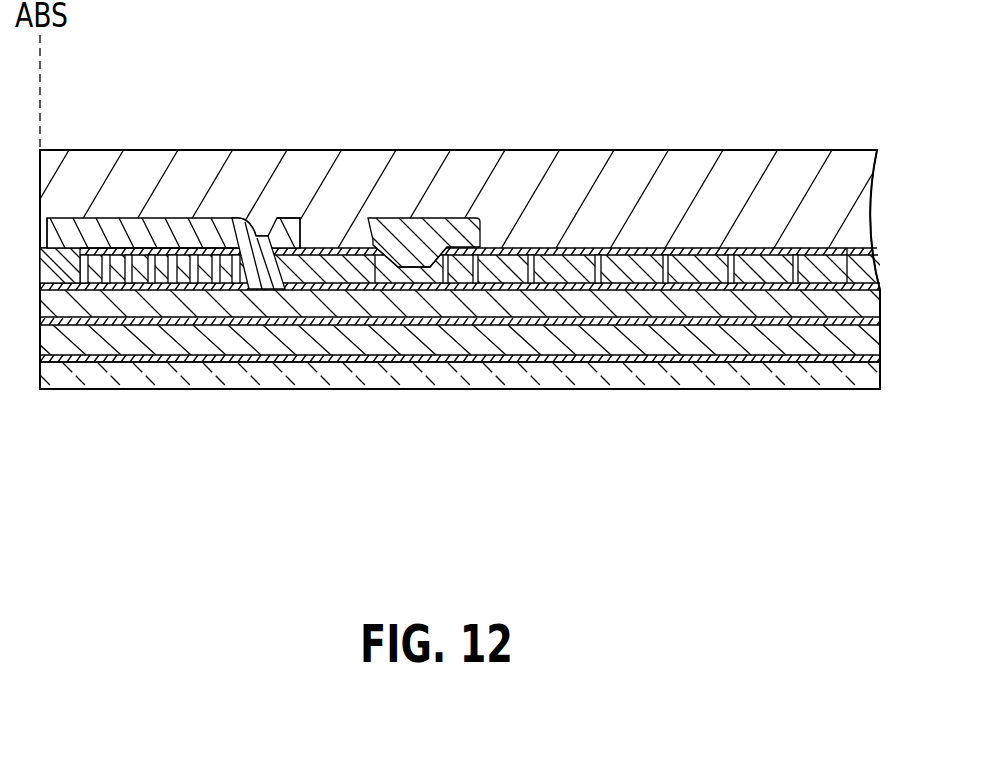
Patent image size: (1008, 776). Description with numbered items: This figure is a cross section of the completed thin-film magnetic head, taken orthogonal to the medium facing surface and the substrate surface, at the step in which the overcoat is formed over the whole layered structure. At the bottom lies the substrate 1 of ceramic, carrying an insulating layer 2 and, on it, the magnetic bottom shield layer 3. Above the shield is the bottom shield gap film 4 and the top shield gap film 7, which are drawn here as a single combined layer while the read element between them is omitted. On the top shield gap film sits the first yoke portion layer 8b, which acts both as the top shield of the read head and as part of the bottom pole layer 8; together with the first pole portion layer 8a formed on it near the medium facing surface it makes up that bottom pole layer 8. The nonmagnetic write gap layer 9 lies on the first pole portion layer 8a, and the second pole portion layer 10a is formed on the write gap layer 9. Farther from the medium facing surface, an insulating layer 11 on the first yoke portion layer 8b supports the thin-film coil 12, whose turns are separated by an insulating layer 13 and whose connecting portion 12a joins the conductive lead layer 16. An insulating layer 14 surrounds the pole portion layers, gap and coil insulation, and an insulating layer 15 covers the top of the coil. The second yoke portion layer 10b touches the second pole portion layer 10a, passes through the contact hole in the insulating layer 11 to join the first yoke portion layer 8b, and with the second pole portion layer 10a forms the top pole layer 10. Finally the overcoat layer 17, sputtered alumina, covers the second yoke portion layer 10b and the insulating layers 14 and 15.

The substrate 1 is at (350, 376).
The insulating layer 2 is at (412, 357).
The bottom shield layer 3 is at (458, 350).
The bottom shield gap film 4 is at (287, 358).
The top shield gap film 7 is at (292, 450).
The bottom pole layer 8 is at (190, 324).
The first pole portion layer 8a is at (63, 290).
The first yoke portion layer 8b is at (105, 322).
The write gap layer 9 is at (50, 290).
The top pole layer 10 is at (168, 216).
The second pole portion layer 10a is at (57, 222).
The second yoke portion layer 10b is at (125, 255).
The insulating layer 11 is at (100, 278).
The thin-film coil 12 is at (240, 258).
The connecting portion 12a is at (417, 267).
The insulating layer 13 is at (254, 242).
The insulating layer 14 is at (840, 253).
The insulating layer 15 is at (197, 275).
The lead layer 16 is at (398, 237).
The overcoat layer 17 is at (520, 165).